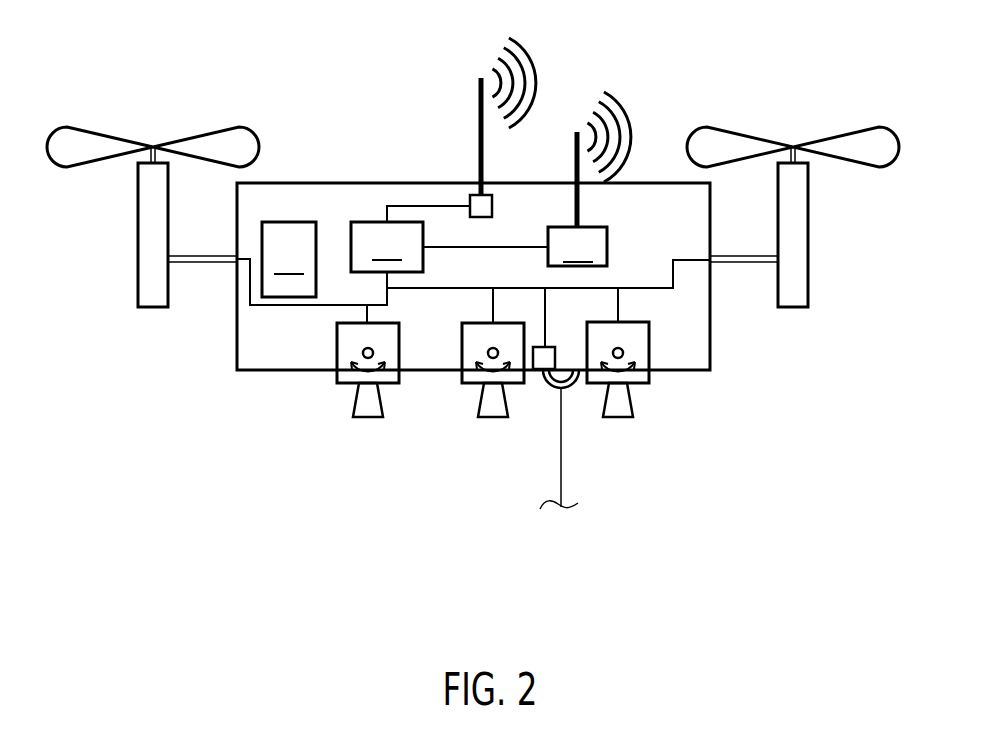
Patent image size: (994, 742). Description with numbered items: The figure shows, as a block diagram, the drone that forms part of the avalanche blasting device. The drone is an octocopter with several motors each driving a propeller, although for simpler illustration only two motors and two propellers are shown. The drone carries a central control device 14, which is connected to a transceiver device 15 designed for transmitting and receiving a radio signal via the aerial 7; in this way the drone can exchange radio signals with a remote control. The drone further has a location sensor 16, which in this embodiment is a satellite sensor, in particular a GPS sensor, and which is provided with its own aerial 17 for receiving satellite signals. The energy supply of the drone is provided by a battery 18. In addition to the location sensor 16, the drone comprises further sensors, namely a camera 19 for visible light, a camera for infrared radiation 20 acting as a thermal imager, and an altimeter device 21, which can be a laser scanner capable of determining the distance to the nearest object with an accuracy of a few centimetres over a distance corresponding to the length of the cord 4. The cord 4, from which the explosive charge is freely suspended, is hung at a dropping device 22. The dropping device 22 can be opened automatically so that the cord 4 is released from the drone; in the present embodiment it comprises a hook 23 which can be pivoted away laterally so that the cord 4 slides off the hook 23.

The cord 4 is at (561, 483).
The aerial 7 is at (478, 93).
The central control device 14 is at (387, 247).
The transceiver device 15 is at (492, 205).
The location sensor 16 is at (577, 246).
The aerial 17 is at (574, 148).
The battery 18 is at (289, 259).
The camera 19 is at (640, 387).
The camera for infrared radiation 20 is at (470, 385).
The altimeter device 21 is at (345, 385).
The dropping device 22 is at (538, 371).
The hook 23 is at (572, 388).